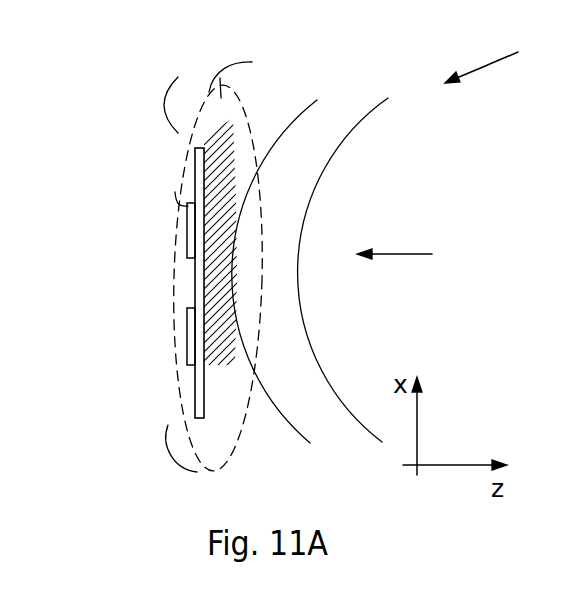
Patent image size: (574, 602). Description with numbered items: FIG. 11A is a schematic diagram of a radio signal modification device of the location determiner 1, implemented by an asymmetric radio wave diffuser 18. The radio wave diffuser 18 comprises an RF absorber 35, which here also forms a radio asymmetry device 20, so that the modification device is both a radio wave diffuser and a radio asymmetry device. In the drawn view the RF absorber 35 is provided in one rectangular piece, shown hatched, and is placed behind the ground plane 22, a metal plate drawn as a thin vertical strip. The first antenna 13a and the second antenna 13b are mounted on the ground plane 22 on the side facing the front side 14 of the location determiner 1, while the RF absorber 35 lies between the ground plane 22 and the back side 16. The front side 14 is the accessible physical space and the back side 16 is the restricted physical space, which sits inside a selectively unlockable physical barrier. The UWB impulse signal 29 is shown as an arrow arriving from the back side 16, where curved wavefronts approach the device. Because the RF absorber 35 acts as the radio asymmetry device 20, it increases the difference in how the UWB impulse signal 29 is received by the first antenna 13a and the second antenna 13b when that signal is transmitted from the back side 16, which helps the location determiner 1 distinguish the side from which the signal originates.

The location determiner 1 is at (491, 57).
The first antenna 13a is at (187, 244).
The second antenna 13b is at (188, 345).
The front side 14 is at (38, 121).
The back side 16 is at (478, 142).
The radio wave diffuser 18 is at (245, 104).
The radio asymmetry device 20 is at (245, 104).
The ground plane 22 is at (188, 393).
The UWB impulse signal 29 is at (411, 259).
The RF absorber 35 is at (197, 108).